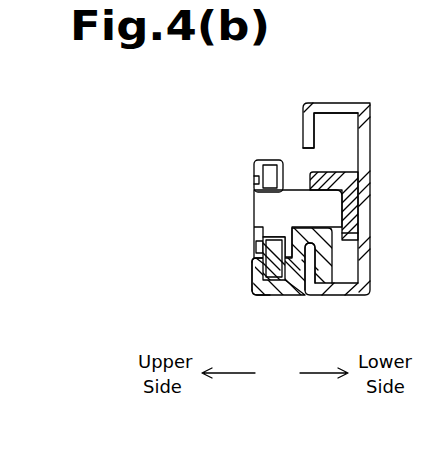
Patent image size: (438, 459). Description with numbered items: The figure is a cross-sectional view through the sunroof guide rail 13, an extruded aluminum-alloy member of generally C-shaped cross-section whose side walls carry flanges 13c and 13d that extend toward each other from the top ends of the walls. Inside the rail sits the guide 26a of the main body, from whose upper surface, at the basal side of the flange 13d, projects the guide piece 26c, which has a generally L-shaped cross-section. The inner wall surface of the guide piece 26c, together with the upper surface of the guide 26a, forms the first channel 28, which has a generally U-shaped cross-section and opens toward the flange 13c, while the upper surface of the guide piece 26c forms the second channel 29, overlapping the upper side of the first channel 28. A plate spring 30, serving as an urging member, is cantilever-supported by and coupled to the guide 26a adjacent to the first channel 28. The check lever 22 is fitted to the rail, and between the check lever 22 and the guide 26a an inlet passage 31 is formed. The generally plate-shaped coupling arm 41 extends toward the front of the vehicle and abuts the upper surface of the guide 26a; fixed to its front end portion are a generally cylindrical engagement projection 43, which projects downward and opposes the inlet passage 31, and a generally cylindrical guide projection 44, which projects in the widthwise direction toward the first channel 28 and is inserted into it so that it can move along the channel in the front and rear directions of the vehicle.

The guide rail 13 is at (372, 126).
The flange 13c is at (303, 128).
The flange 13d is at (313, 272).
The check lever 22 is at (354, 216).
The engagement projection 43 is at (352, 236).
The plate spring 30 is at (261, 231).
The inlet passage 31 is at (297, 188).
The coupling arm 41 is at (254, 179).
The guide projection 44 is at (254, 246).
The second channel 29 is at (252, 268).
The guide 26a is at (297, 286).
The guide piece 26c is at (257, 287).
The first channel 28 is at (280, 283).